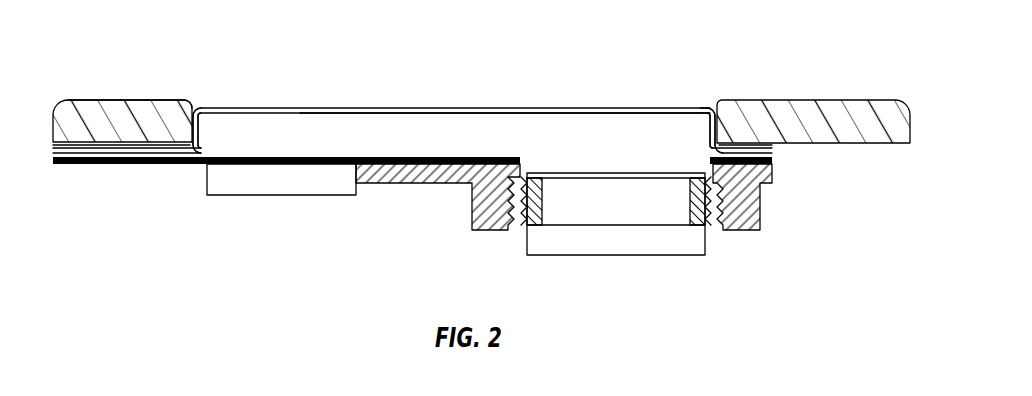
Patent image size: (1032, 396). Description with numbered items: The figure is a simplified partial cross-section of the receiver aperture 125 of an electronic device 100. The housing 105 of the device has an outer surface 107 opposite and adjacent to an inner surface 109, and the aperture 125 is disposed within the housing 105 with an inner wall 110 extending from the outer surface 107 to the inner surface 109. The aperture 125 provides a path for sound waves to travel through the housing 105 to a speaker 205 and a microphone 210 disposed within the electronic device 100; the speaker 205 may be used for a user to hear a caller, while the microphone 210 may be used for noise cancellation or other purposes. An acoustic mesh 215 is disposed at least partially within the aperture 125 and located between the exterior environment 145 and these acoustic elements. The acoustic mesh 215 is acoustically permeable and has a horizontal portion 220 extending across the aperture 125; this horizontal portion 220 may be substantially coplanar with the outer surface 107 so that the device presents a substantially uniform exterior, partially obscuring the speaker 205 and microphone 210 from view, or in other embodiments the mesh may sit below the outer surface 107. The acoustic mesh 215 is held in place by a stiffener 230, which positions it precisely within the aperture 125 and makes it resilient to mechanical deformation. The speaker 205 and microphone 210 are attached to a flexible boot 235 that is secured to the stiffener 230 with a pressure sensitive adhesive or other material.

The electronic device 100 is at (829, 49).
The housing 105 is at (84, 112).
The outer surface 107 is at (122, 100).
The inner surface 109 is at (822, 145).
The inner wall 110 is at (188, 122).
The aperture 125 is at (500, 145).
The exterior environment 145 is at (608, 46).
The speaker 205 is at (617, 240).
The microphone 210 is at (283, 177).
The acoustic mesh 215 is at (363, 108).
The horizontal portion 220 is at (438, 108).
The stiffener 230 is at (710, 125).
The flexible boot 235 is at (433, 172).